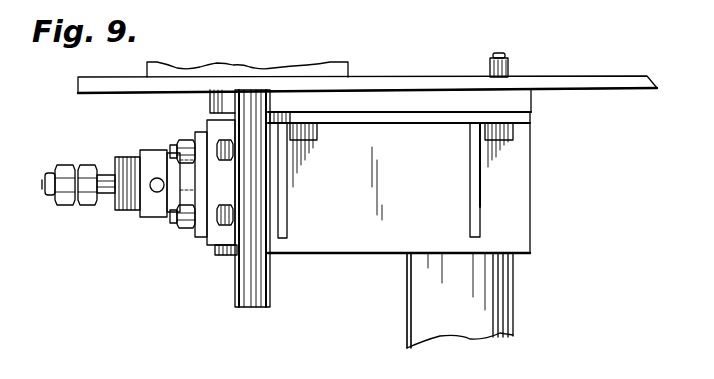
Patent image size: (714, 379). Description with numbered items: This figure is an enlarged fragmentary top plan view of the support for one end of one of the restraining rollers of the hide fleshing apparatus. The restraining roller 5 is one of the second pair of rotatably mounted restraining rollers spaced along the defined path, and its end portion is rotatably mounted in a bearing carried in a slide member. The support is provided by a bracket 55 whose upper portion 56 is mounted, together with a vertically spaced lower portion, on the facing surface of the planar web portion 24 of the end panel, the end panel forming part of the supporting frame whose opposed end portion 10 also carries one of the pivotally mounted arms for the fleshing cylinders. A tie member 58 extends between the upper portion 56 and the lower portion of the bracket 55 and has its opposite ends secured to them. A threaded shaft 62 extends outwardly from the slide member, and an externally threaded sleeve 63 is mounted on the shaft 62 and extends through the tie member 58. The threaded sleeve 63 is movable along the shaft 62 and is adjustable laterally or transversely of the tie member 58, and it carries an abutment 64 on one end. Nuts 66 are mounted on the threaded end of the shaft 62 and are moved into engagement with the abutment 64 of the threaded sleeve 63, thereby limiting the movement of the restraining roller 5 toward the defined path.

The end portion 10 is at (383, 86).
The planar web portion 24 is at (107, 83).
The restraining roller 5 is at (508, 316).
The bracket 55 is at (424, 203).
The upper portion 56 is at (517, 198).
The tie member 58 is at (205, 238).
The threaded shaft 62 is at (49, 193).
The threaded sleeve 63 is at (131, 210).
The abutment 64 is at (93, 188).
The nut 66 is at (88, 206).